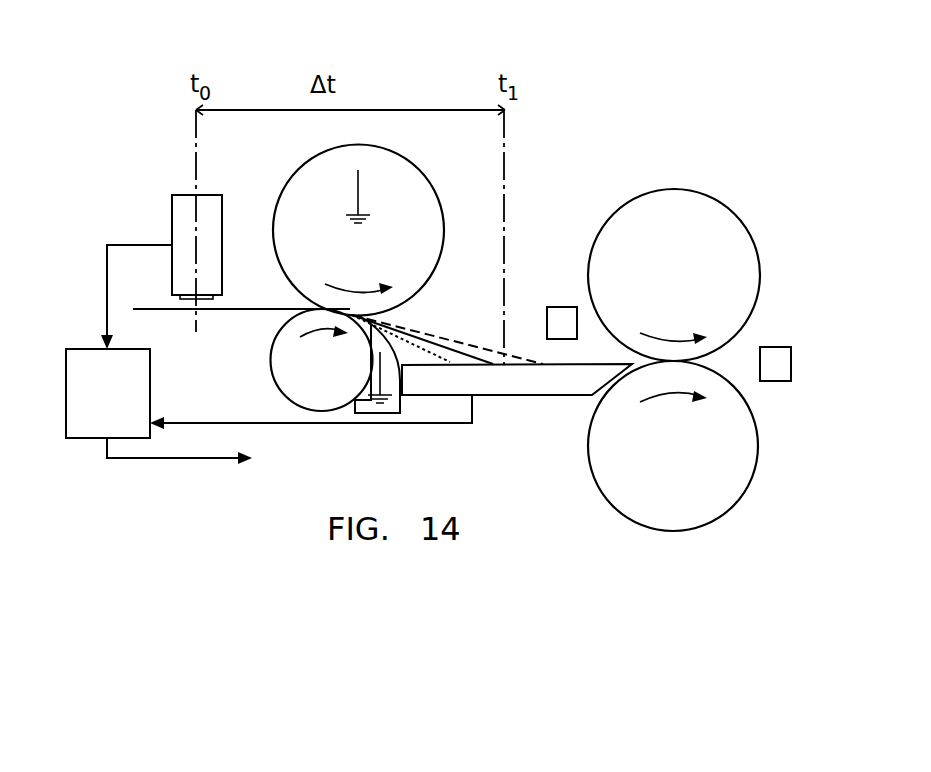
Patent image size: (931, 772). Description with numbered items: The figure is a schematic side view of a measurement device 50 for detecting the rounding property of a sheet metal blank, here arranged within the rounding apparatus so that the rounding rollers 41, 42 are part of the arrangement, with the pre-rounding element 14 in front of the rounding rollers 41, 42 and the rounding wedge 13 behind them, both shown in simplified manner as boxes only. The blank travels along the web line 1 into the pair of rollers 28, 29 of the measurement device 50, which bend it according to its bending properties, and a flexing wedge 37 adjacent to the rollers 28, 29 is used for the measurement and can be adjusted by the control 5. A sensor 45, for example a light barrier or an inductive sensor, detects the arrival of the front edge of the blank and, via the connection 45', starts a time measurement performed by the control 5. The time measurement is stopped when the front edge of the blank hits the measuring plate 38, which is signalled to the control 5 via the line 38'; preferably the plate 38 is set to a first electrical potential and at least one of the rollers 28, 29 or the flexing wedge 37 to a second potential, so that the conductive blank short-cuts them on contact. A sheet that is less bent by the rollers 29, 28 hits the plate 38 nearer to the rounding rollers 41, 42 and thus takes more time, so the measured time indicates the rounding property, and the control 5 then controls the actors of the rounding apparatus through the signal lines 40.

The web / substrate 1 is at (241, 308).
The control 5 is at (88, 387).
The rounding wedge 13 is at (772, 348).
The pre-rounding element 14 is at (562, 310).
The roller 28 is at (272, 358).
The roller 29 is at (303, 189).
The flexing wedge 37 is at (364, 405).
The measuring plate 38 is at (517, 404).
The line 38' is at (311, 431).
The signal lines 40 is at (170, 459).
The rounding roller 41 is at (680, 210).
The rounding roller 42 is at (604, 481).
The sensor 45 is at (169, 247).
The sensor signal line 45' is at (109, 297).
The measurement device 50 is at (489, 215).